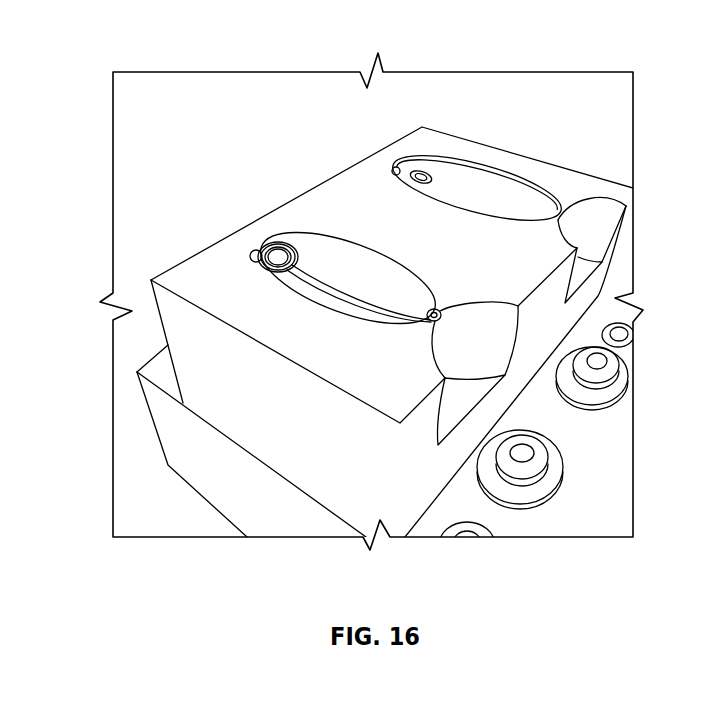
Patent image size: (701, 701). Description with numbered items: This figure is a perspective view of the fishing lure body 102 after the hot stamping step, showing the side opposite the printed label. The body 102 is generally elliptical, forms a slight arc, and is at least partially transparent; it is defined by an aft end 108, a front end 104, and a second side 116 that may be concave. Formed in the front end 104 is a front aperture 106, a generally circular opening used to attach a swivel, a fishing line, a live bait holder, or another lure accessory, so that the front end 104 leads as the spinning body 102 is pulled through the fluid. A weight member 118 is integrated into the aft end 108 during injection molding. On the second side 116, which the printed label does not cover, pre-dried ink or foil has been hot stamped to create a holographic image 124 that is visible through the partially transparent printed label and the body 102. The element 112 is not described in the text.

The body 102 is at (350, 247).
The front end 104 is at (433, 308).
The front aperture 106 is at (428, 322).
The aft end 108 is at (254, 250).
The ring 112 is at (264, 268).
The second side 116 is at (387, 297).
The weight member 118 is at (279, 256).
The holographic image 124 is at (317, 284).